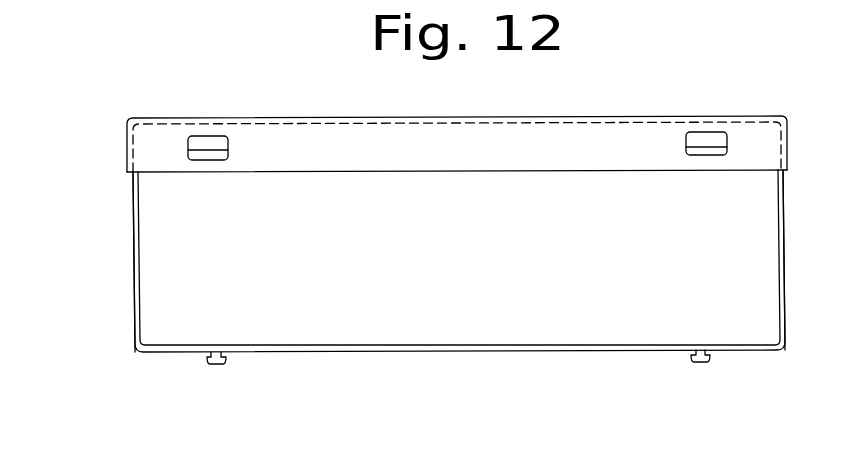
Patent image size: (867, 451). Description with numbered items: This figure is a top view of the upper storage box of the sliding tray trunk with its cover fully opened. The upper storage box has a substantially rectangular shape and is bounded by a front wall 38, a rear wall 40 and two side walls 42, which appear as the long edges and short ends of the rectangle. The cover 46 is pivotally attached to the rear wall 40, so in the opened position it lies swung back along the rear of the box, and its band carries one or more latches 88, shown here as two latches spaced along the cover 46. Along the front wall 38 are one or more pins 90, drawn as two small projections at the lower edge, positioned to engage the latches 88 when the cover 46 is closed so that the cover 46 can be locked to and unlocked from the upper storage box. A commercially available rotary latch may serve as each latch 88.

The front wall 38 is at (275, 352).
The rear wall 40 is at (544, 126).
The side walls 42 is at (133, 261).
The cover 46 is at (290, 118).
The latches 88 is at (212, 134).
The pins 90 is at (216, 364).